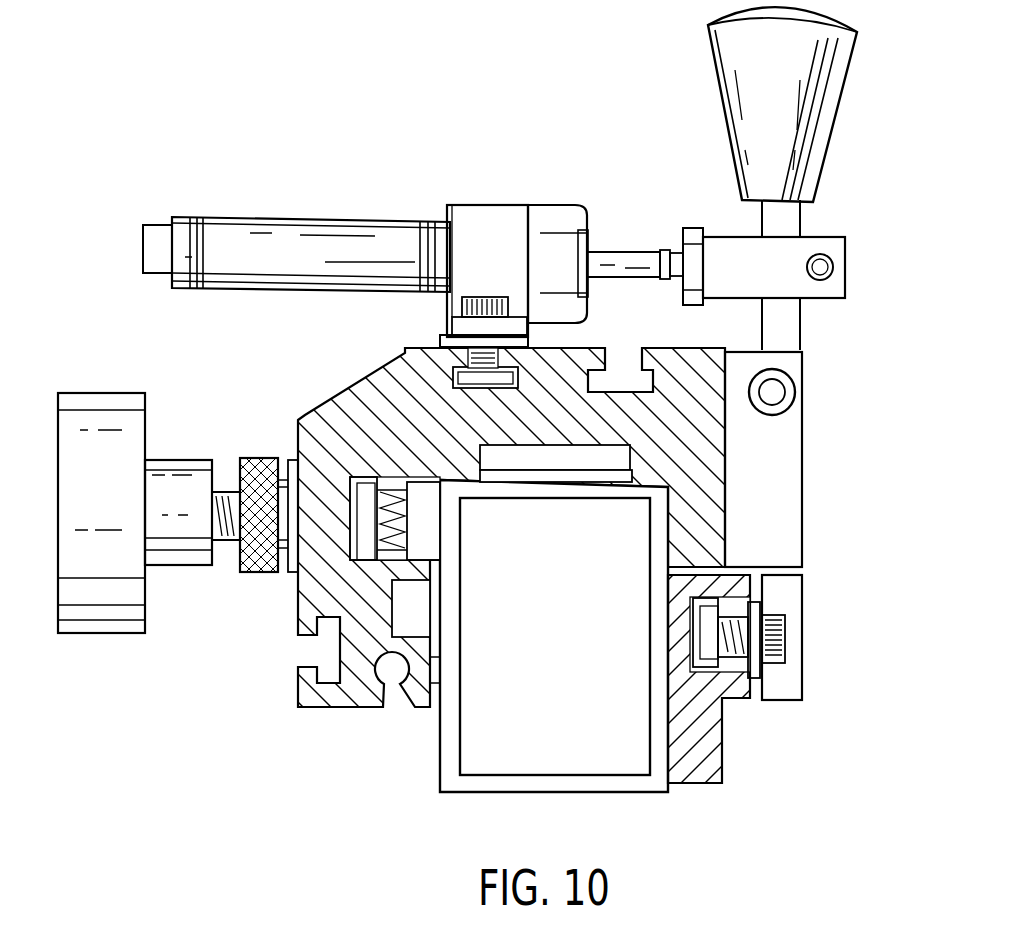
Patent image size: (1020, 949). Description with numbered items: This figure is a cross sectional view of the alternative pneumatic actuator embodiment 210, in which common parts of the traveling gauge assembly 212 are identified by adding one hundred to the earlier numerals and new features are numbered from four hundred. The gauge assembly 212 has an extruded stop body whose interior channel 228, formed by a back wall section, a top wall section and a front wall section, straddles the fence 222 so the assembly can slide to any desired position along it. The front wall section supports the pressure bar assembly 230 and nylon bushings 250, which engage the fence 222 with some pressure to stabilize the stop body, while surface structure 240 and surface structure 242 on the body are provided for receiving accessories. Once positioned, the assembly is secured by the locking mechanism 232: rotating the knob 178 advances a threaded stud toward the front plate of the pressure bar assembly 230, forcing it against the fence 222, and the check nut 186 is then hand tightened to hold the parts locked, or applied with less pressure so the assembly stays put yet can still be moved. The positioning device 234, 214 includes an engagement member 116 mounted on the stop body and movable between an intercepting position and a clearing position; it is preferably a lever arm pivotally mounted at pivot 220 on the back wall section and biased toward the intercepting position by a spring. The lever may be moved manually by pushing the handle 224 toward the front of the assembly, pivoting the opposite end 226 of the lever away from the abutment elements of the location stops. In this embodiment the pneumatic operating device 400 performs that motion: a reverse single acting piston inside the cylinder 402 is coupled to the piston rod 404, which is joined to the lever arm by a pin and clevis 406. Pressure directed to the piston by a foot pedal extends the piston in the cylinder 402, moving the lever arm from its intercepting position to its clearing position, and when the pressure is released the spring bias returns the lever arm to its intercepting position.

The pneumatic actuator embodiment 210 is at (362, 118).
The handle 224 is at (722, 100).
The pneumatic operating device 400 is at (291, 230).
The cylinder 402 is at (388, 235).
The piston rod 404 is at (615, 258).
The pin and clevis 406 is at (820, 243).
The surface structure 240 is at (620, 378).
The pivot 220 is at (793, 393).
The knob 178 is at (88, 400).
The traveling gauge assembly 212 is at (330, 394).
The check nut 186 is at (258, 458).
The positioning device 234 is at (805, 502).
The interior channel 228 is at (667, 535).
The pressure bar assembly 230 is at (428, 538).
The locking mechanism 232 is at (178, 545).
The nylon bushings 250 is at (437, 667).
The surface structure 242 is at (294, 654).
The fence 222 is at (458, 736).
The engagement member 116 is at (786, 650).
The opposite end of lever 226 is at (787, 703).
The positioning device 214 is at (722, 747).